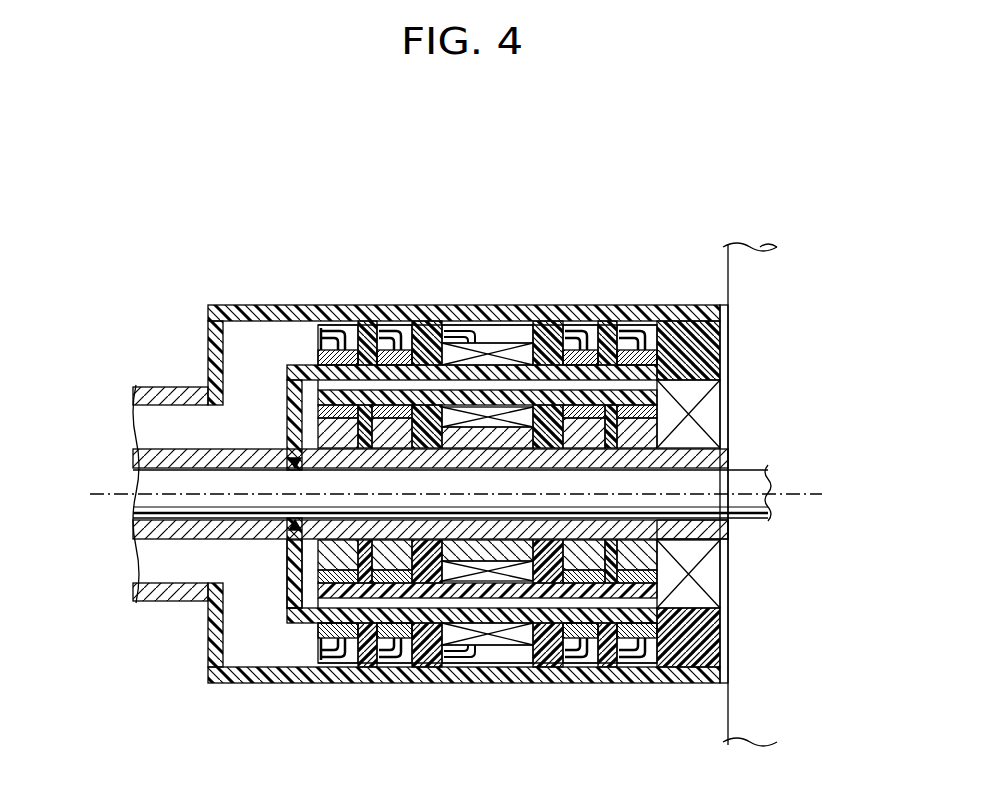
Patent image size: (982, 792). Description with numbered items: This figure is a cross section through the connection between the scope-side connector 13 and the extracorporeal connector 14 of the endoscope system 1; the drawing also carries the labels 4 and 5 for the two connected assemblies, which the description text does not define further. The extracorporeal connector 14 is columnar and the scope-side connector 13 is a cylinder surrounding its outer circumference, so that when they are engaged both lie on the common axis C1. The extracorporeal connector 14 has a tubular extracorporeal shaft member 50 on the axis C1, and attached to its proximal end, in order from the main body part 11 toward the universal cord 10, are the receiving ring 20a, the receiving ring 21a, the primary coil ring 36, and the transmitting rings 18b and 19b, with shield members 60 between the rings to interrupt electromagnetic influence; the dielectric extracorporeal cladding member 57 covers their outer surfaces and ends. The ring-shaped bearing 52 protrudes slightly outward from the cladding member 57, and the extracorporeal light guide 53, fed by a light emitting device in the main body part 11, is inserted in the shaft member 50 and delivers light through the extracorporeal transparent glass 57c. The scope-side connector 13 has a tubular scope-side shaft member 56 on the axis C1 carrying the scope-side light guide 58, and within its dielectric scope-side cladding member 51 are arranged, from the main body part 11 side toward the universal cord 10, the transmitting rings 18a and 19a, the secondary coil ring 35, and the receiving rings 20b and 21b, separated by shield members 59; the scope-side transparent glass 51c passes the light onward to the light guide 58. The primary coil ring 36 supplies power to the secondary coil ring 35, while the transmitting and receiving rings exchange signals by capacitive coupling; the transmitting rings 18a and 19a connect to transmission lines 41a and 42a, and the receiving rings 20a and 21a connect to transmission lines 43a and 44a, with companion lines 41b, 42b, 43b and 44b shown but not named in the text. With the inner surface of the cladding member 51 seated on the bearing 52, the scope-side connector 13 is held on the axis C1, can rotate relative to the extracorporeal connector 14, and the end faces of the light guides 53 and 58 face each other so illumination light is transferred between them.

The motor unit 1 is at (180, 203).
The tube 4 is at (111, 250).
The partition wall 5 is at (775, 239).
The universal cord 10 is at (163, 395).
The main body part 11 is at (727, 267).
The scope-side connector 13 is at (203, 308).
The extracorporeal connector 14 is at (735, 401).
The transmitting ring (first electrode) 18a is at (662, 335).
The transmitting ring (second electrode) 18b is at (393, 645).
The transmitting ring (third electrode) 19a is at (600, 345).
The transmitting ring (fourth electrode) 19b is at (328, 645).
The receiving ring (second electrode) 20a is at (648, 640).
The receiving ring (first electrode) 20b is at (420, 335).
The receiving ring (fourth electrode) 21a is at (600, 640).
The receiving ring (third electrode) 21b is at (350, 335).
The secondary coil ring (first coil) 35 is at (508, 345).
The primary coil ring (second coil) 36 is at (490, 640).
The transmission line 41a is at (630, 335).
The second magnet 41b is at (420, 640).
The transmission line 42a is at (578, 335).
The second coil 42b is at (365, 640).
The transmission line 43a is at (614, 560).
The second core 43b is at (383, 335).
The transmission line 44a is at (600, 642).
The second coil 44b is at (328, 335).
The extracorporeal shaft member 50 is at (723, 533).
The scope-side cladding member 51 is at (247, 308).
The scope-side transparent glass 51c is at (296, 470).
The bearing 52 is at (715, 587).
The extracorporeal light guide 53 is at (770, 480).
The scope-side shaft member 56 is at (140, 528).
The extracorporeal cladding member 57 is at (305, 580).
The extracorporeal transparent glass 57c is at (305, 514).
The scope-side light guide 58 is at (143, 478).
The shield members 59 is at (368, 356).
The shield members 60 is at (366, 636).
The axis C1 is at (792, 495).